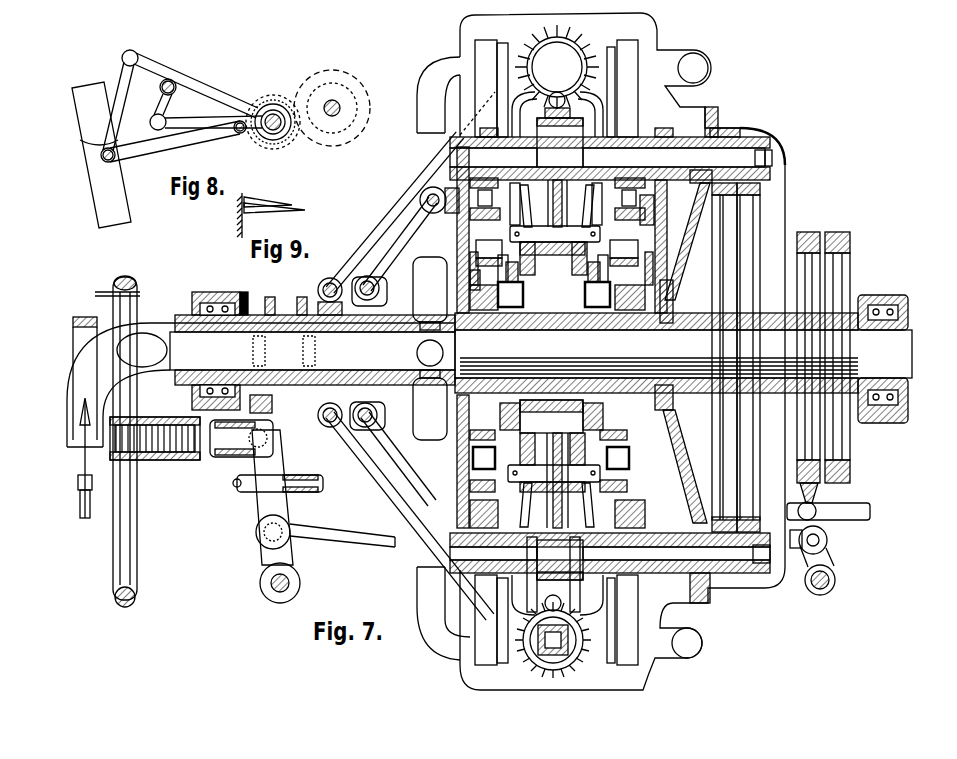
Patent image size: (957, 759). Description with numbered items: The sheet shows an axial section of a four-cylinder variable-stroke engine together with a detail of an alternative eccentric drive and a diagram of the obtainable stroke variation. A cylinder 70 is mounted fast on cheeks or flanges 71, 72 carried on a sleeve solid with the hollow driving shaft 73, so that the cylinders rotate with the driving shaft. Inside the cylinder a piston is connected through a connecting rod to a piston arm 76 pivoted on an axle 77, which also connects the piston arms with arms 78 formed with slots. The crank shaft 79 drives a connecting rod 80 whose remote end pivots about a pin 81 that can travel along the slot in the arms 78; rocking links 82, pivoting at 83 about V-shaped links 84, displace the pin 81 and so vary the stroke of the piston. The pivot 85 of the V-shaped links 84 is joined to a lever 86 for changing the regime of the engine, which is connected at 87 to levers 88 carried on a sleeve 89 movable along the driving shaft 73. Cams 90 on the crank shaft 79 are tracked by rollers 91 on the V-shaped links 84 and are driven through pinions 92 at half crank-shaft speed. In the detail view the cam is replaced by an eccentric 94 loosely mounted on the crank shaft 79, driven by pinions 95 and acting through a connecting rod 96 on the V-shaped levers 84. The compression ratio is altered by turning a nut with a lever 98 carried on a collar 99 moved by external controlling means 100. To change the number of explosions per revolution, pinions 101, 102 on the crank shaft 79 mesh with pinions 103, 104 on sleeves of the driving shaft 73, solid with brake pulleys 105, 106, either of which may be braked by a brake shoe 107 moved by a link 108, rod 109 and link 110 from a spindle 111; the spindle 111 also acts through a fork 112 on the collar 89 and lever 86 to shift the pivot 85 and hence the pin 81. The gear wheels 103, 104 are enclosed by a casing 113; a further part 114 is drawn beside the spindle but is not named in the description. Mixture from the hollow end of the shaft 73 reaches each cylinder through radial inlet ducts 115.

In FIG. 7, the cylinder 70 is at (588, 48).
In FIG. 7, the cheek or flange 71 is at (530, 200).
In FIG. 7, the cheek or flange 72 is at (585, 200).
In FIG. 7, the driving shaft 73 is at (918, 325).
In FIG. 7, the piston arm 76 is at (580, 625).
In FIG. 7, the axle 77 is at (551, 417).
In FIG. 7, the slotted arm 78 is at (547, 505).
In FIG. 8, the crank shaft 79 is at (272, 140).
In FIG. 7, the crank shaft 79 is at (565, 128).
In FIG. 8, the connecting rod 80 is at (153, 150).
In FIG. 7, the connecting rod 80 is at (560, 200).
In FIG. 8, the pin 81 is at (98, 170).
In FIG. 7, the pin 81 is at (554, 354).
In FIG. 7, the rocking link 82 is at (518, 268).
In FIG. 7, the pivot 83 is at (523, 291).
In FIG. 8, the V-shaped link 84 is at (160, 68).
In FIG. 7, the V-shaped link 84 is at (478, 278).
In FIG. 8, the pivot 85 is at (178, 82).
In FIG. 7, the pivot 85 is at (557, 253).
In FIG. 8, the lever 86 is at (222, 98).
In FIG. 7, the lever 86 is at (440, 212).
In FIG. 7, the connection 87 is at (430, 338).
In FIG. 7, the lever 88 is at (382, 291).
In FIG. 7, the sleeve 89 is at (380, 300).
In FIG. 7, the cam 90 is at (485, 128).
In FIG. 7, the roller 91 is at (655, 196).
In FIG. 7, the pinion 92 is at (497, 124).
In FIG. 8, the eccentric 94 is at (280, 100).
In FIG. 8, the pinion 95 is at (313, 130).
In FIG. 8, the connecting rod 96 is at (218, 128).
In FIG. 7, the lever 98 is at (378, 230).
In FIG. 7, the collar 99 is at (320, 287).
In FIG. 7, the external controlling means 100 is at (312, 486).
In FIG. 7, the pinion 101 is at (725, 128).
In FIG. 7, the pinion 102 is at (762, 130).
In FIG. 7, the pinion 103 is at (728, 232).
In FIG. 7, the pinion 104 is at (750, 235).
In FIG. 7, the brake pulley 105 is at (808, 232).
In FIG. 7, the brake pulley 106 is at (838, 232).
In FIG. 7, the brake shoe 107 is at (815, 503).
In FIG. 7, the link 108 is at (272, 500).
In FIG. 7, the rod 109 is at (362, 538).
In FIG. 7, the link 110 is at (826, 552).
In FIG. 7, the spindle 111 is at (222, 445).
In FIG. 7, the fork 112 is at (258, 405).
In FIG. 7, the casing 113 is at (775, 160).
In FIG. 7, the threaded screw 114 is at (155, 460).
In FIG. 7, the radial inlet duct 115 is at (417, 125).